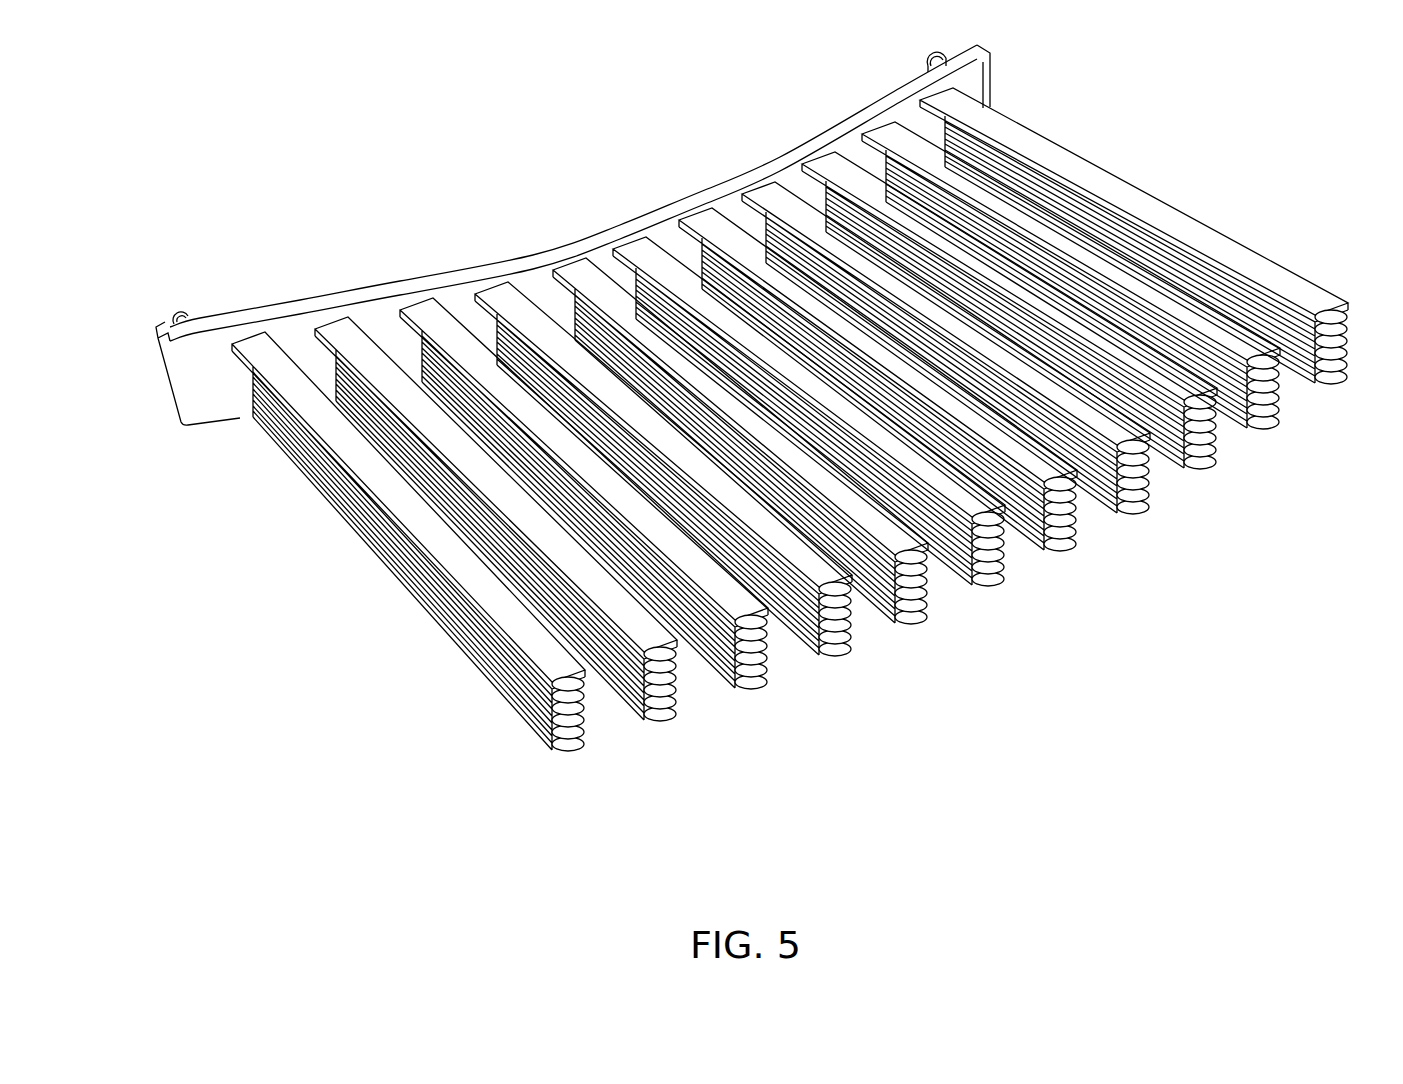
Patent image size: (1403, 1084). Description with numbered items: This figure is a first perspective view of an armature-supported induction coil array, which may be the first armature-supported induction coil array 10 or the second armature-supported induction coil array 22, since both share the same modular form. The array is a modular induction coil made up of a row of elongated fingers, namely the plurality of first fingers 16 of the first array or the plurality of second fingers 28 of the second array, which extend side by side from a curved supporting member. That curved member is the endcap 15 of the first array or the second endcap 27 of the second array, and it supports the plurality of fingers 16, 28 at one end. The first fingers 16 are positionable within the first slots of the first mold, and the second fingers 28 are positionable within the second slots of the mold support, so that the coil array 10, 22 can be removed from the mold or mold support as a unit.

The first armature-supported induction coil array 10 is at (752, 447).
The second armature-supported induction coil array 22 is at (413, 150).
The endcap 15 is at (573, 235).
The second endcap 27 is at (590, 246).
The first fingers 16 is at (790, 468).
The second fingers 28 is at (580, 748).